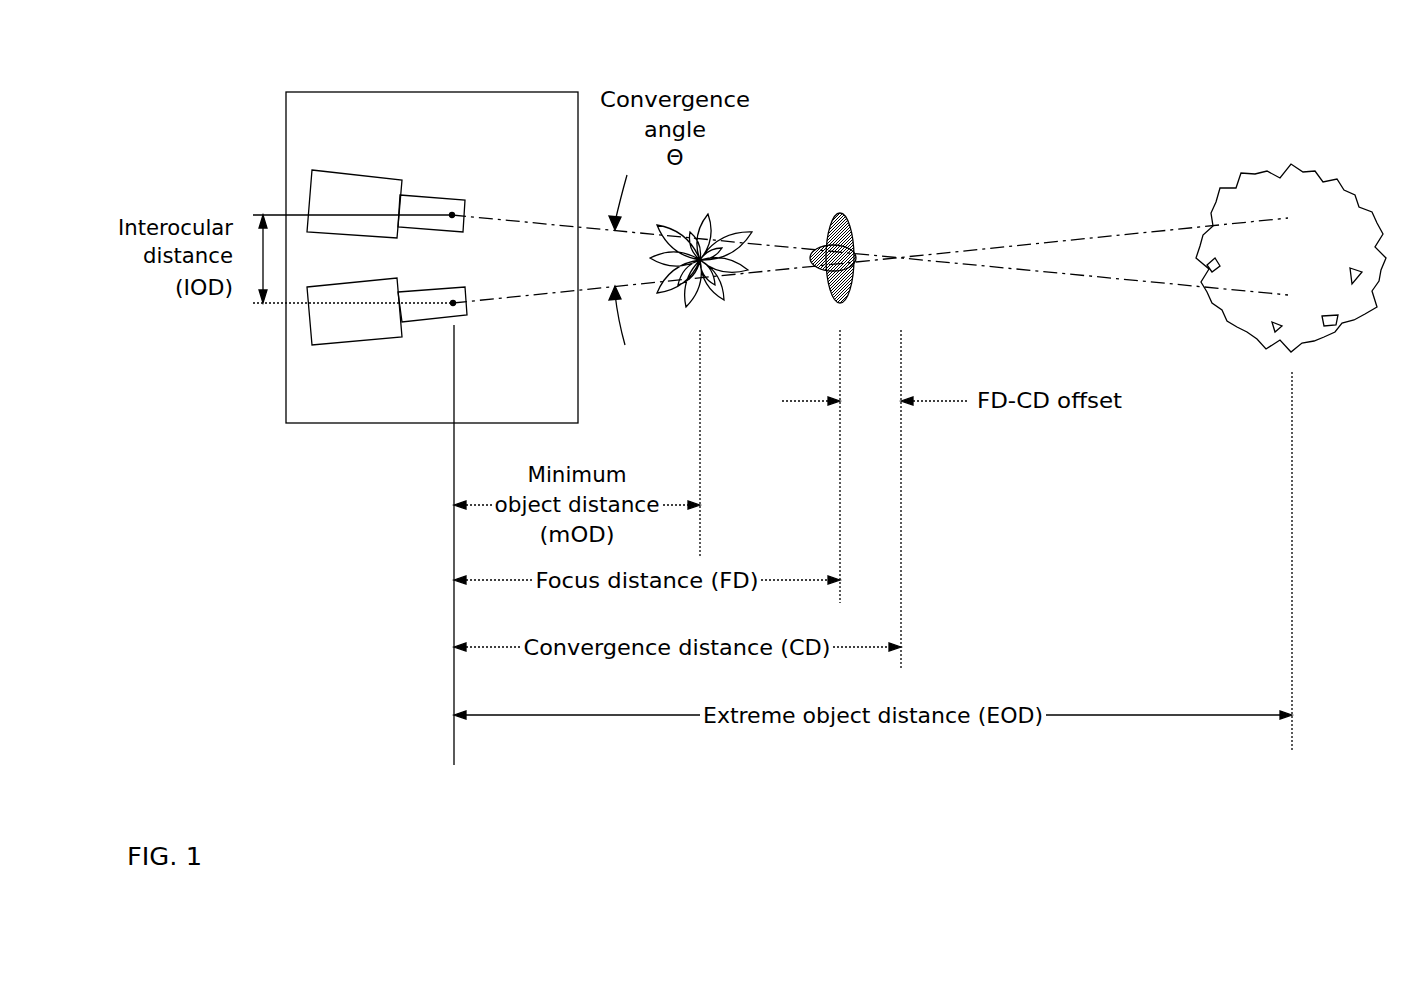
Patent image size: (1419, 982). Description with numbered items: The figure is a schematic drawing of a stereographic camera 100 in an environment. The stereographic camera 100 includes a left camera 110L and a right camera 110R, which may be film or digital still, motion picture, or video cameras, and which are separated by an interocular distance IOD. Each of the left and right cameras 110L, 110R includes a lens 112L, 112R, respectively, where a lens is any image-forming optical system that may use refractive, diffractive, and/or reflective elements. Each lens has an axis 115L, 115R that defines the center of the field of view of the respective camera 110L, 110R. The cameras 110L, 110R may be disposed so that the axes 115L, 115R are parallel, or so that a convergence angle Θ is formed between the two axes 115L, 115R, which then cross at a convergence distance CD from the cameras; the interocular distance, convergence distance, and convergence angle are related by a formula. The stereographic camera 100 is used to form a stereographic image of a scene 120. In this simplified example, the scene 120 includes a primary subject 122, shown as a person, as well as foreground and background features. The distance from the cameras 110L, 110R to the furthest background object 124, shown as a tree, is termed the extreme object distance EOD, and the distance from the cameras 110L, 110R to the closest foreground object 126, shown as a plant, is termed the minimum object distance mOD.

The stereographic camera 100 is at (432, 257).
The left camera 110L is at (355, 172).
The right camera 110R is at (377, 343).
The lens 112L is at (432, 195).
The lens 112R is at (467, 318).
The axis 115L is at (1032, 267).
The axis 115R is at (1032, 243).
The scene 120 is at (666, 27).
The primary subject 122 is at (840, 213).
The furthest background object 124 is at (1300, 172).
The closest foreground object 126 is at (720, 227).